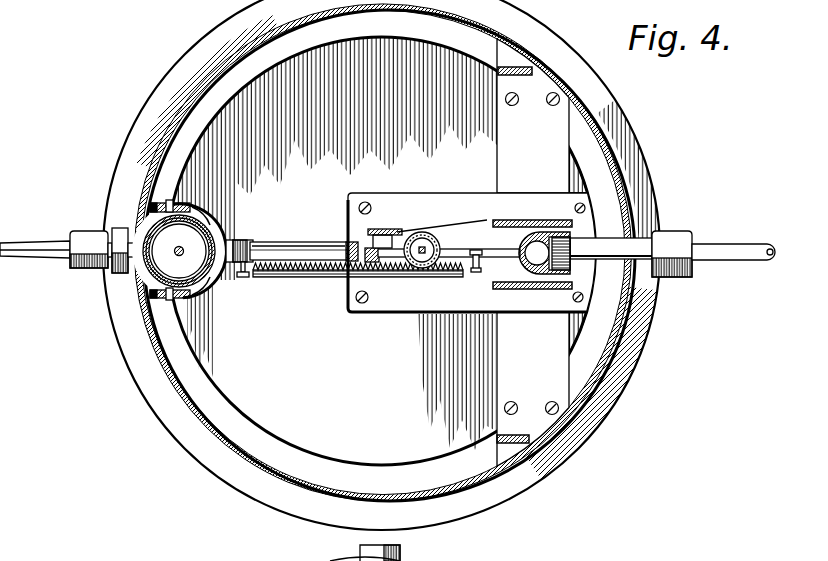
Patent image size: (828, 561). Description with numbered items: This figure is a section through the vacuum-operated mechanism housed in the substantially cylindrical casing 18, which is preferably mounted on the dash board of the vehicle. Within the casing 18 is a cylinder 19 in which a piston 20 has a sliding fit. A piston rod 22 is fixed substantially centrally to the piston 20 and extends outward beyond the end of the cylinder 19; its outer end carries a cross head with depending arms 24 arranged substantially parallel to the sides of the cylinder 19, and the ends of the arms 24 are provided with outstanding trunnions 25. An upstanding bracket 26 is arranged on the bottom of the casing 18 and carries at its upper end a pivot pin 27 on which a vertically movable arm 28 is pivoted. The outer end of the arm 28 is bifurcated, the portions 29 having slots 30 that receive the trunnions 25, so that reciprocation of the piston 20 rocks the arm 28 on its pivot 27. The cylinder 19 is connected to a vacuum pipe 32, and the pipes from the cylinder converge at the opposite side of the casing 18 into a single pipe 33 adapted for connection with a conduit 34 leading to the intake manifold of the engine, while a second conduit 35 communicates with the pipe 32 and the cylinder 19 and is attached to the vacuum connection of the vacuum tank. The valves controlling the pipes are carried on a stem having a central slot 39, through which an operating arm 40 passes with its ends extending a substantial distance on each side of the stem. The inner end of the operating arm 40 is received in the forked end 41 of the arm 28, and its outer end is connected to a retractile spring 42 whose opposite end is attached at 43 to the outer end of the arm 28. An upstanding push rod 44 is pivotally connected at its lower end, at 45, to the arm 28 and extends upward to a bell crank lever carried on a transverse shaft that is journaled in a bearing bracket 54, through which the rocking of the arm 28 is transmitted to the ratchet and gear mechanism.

The casing 18 is at (234, 459).
The cylinder 19 is at (147, 234).
The piston 20 is at (168, 259).
The piston rod 22 is at (150, 284).
The depending arms 24 is at (171, 203).
The trunnions 25 is at (194, 205).
The upstanding bracket 26 is at (388, 229).
The pivot pin 27 is at (378, 276).
The vertically movable arm 28 is at (296, 250).
The bifurcated portions 29 is at (214, 292).
The slots 30 is at (150, 205).
The vacuum pipe 32 is at (282, 247).
The single pipe 33 is at (610, 239).
The conduit 34 is at (744, 247).
The second conduit 35 is at (22, 245).
The slot 39 is at (426, 247).
The operating arm 40 is at (478, 249).
The forked end 41 is at (420, 240).
The retractile spring 42 is at (344, 278).
The spring connection 43 is at (244, 272).
The push rod 44 is at (367, 247).
The pivotal connection 45 is at (347, 243).
The bearing bracket 54 is at (549, 221).